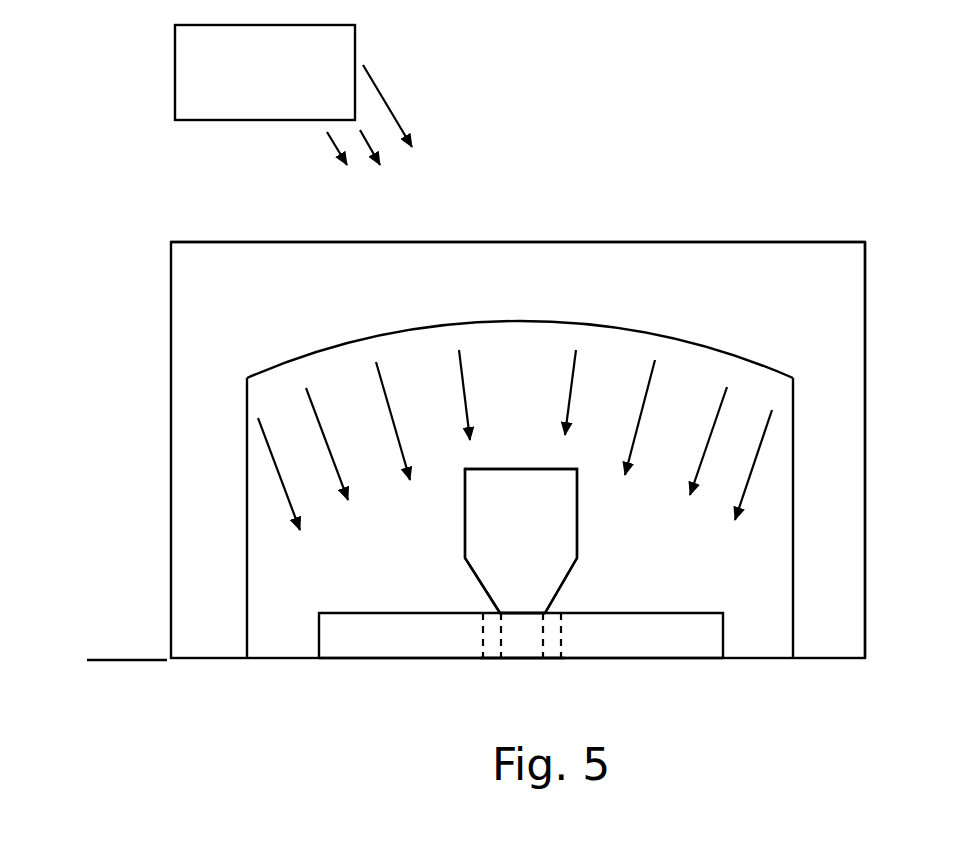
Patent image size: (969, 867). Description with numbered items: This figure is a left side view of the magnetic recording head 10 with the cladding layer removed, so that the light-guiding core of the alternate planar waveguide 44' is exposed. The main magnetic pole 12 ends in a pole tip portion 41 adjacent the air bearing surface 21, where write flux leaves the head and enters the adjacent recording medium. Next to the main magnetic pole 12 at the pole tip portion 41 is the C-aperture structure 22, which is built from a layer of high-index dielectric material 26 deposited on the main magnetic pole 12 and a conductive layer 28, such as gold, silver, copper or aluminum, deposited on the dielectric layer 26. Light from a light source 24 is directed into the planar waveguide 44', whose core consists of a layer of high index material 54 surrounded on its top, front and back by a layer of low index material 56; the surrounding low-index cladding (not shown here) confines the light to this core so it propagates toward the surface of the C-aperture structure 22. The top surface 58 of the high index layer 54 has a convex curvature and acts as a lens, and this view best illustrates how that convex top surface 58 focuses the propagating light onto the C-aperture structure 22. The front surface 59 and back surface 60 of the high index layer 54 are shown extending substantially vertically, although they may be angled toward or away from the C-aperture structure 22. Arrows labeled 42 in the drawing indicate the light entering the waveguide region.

The magnetic recording head 10 is at (451, 468).
The main magnetic pole 12 is at (541, 529).
The air bearing surface 21 is at (110, 658).
The C-aperture structure 22 is at (679, 598).
The light source 24 is at (225, 122).
The dielectric layer 26 is at (490, 610).
The conductive layer 28 is at (693, 645).
The pole tip portion 41 is at (522, 660).
The bonding apparatus 42 is at (530, 222).
The planar waveguide 44' is at (518, 199).
The high index material layer 54 is at (633, 386).
The low index material layer 56 is at (808, 309).
The top surface of the high index layer 58 is at (300, 356).
The front surface of the high index layer 59 is at (795, 458).
The back surface of the high index layer 60 is at (245, 507).